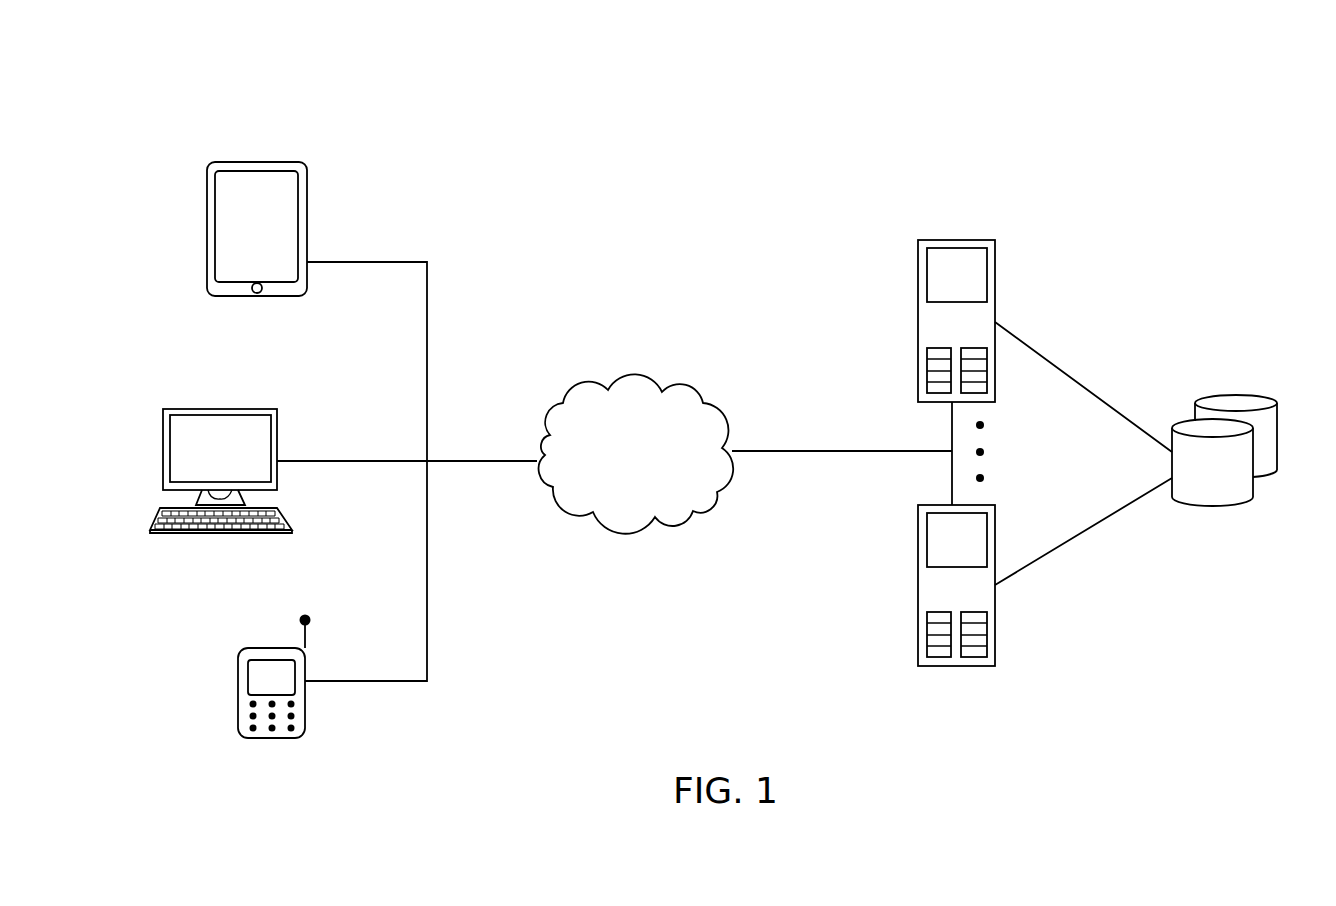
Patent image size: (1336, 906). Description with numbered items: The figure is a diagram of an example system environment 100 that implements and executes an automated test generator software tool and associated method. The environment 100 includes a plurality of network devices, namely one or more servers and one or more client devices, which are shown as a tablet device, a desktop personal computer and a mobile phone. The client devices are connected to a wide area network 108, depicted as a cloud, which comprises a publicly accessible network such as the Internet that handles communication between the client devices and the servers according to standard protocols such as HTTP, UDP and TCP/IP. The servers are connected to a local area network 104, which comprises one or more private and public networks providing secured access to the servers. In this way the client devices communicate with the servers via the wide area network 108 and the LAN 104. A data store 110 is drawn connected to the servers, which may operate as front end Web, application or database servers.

The system environment 100 is at (730, 42).
The local area network (LAN) 104 is at (790, 451).
The wide area network 108 is at (613, 475).
The data store 110 is at (1190, 481).